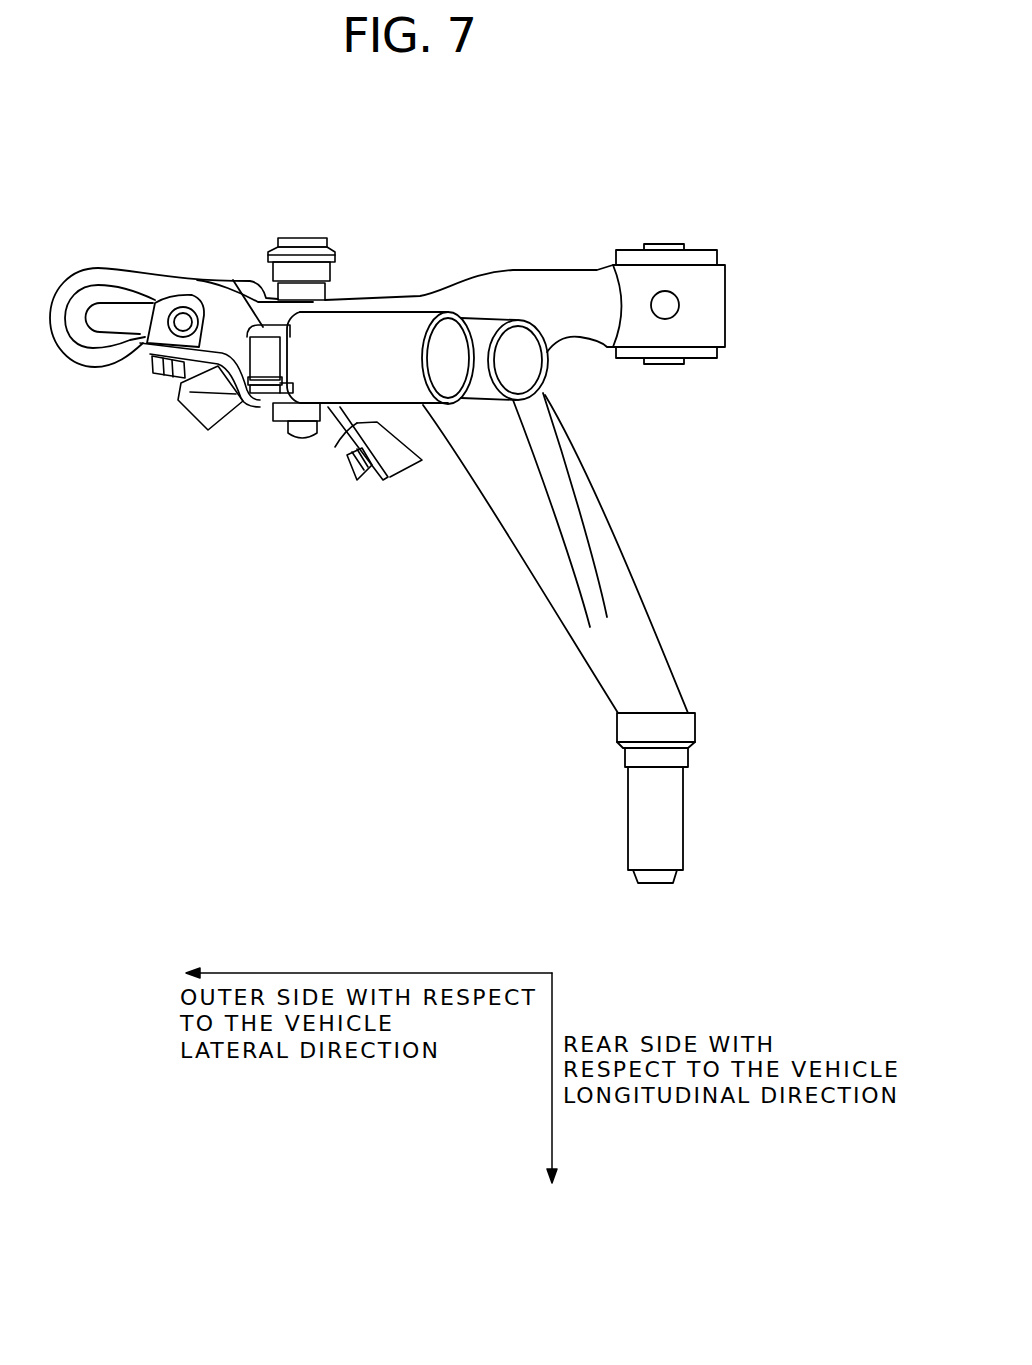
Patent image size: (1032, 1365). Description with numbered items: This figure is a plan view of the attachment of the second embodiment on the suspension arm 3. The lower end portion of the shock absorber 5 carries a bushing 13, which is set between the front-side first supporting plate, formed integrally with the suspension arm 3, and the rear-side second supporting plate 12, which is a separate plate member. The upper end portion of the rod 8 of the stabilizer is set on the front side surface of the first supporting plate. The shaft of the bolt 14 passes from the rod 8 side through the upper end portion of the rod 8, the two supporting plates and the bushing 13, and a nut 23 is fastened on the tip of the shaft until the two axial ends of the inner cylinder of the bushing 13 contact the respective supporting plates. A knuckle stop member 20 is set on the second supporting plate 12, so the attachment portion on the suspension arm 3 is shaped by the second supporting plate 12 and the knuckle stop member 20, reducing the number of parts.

The suspension arm 3 is at (537, 505).
The shock absorber 5 is at (383, 337).
The rod 8 is at (303, 238).
The second supporting plate 12 is at (333, 440).
The bushing 13 is at (267, 352).
The bolt 14 is at (298, 442).
The knuckle stop member 20 is at (197, 415).
The nut 23 is at (273, 417).